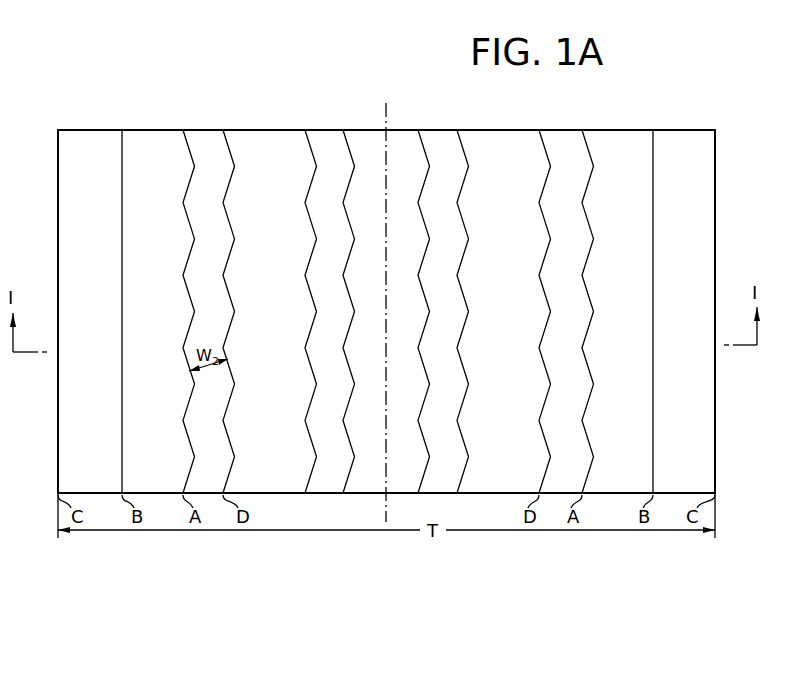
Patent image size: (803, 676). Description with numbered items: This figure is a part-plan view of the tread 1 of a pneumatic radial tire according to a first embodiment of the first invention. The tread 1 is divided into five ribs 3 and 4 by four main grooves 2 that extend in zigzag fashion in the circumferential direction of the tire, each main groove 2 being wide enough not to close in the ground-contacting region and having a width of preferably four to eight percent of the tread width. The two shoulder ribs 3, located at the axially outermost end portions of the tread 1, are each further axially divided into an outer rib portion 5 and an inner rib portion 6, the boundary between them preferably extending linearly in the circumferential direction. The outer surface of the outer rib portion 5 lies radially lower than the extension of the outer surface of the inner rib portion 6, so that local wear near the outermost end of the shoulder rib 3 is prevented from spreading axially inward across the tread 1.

The tread 1 is at (404, 107).
The main groove 2 is at (211, 136).
The shoulder rib 3 is at (183, 118).
The rib 4 is at (266, 136).
The outer rib portion 5 is at (91, 180).
The inner rib portion 6 is at (157, 180).